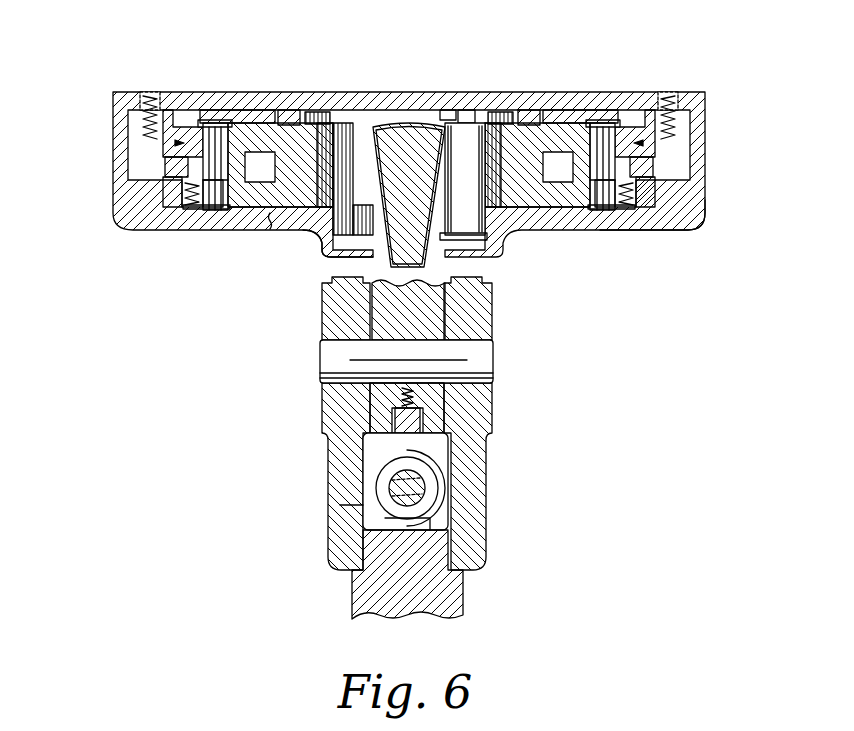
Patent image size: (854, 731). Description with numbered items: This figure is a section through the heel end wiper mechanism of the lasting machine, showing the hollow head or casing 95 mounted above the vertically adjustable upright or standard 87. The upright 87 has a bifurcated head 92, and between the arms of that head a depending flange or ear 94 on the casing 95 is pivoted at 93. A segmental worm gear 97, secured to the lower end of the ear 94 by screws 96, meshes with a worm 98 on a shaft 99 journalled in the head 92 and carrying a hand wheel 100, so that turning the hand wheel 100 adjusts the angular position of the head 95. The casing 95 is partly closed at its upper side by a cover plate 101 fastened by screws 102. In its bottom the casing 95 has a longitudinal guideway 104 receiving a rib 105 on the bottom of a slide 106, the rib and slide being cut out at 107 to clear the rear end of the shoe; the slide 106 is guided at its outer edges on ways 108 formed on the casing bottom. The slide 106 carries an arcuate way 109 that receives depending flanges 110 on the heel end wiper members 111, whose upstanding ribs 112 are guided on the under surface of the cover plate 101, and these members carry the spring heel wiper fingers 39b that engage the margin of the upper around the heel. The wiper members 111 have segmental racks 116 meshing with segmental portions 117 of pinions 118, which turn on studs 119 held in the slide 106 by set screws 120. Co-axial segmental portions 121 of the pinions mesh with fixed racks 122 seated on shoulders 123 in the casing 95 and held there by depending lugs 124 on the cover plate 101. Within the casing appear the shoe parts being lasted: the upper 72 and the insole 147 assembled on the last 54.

The cover plate 101 is at (115, 92).
The screws 102 is at (147, 92).
The depending lugs 124 is at (177, 108).
The studs 119 is at (212, 137).
The segmental portions of pinions 117 is at (243, 110).
The segmental racks 116 is at (266, 112).
The upstanding ribs 112 is at (289, 110).
The heel end wiper members 111 is at (318, 110).
The heel wiper fingers 39b is at (447, 110).
The cut out 107 is at (467, 110).
The pinions 118 is at (176, 143).
The fixed racks 122 is at (165, 168).
The shoulders 123 is at (173, 180).
The co-axial segmental portions 121 is at (180, 184).
The set screws 120 is at (195, 208).
The ways 108 is at (200, 210).
The slide 106 is at (268, 222).
The depending flanges 110 is at (293, 182).
The arcuate way 109 is at (340, 215).
The longitudinal guideway 104 is at (325, 250).
The rib 105 is at (478, 246).
The head or casing 95 is at (680, 236).
The insole 147 is at (409, 195).
The upper 72 is at (465, 179).
The last 54 is at (400, 282).
The pivot 93 is at (470, 355).
The screws 96 is at (414, 402).
The depending flange or ear 94 is at (378, 403).
The segmental worm gear 97 is at (407, 448).
The hand wheel 100 is at (387, 463).
The bifurcated head 92 is at (340, 483).
The shaft 99 is at (410, 482).
The worm 98 is at (430, 498).
The upright or standard 87 is at (428, 588).